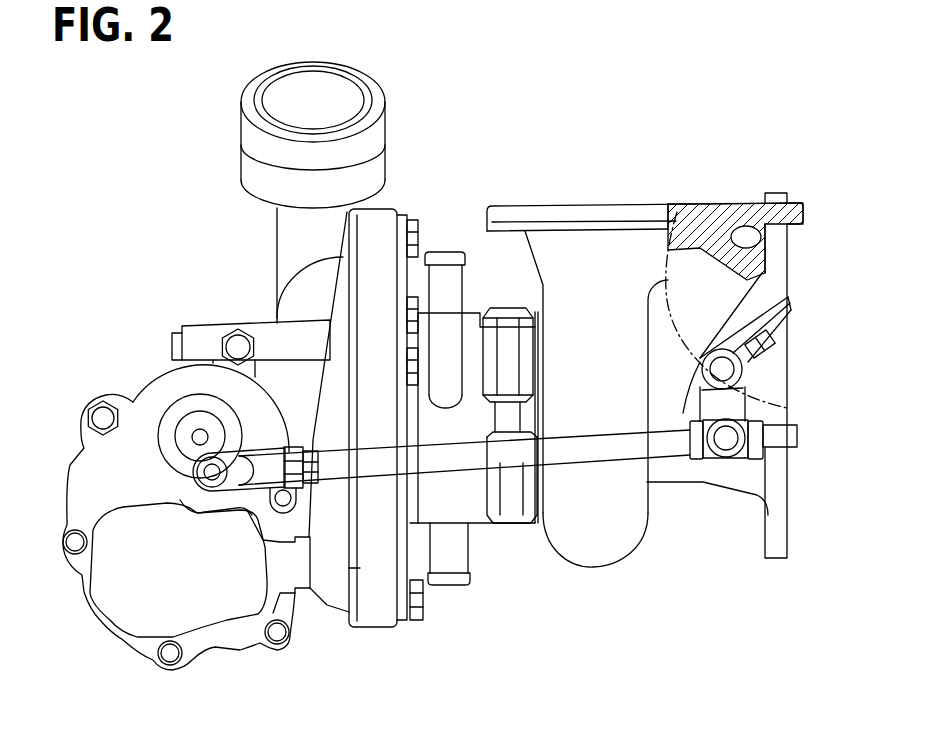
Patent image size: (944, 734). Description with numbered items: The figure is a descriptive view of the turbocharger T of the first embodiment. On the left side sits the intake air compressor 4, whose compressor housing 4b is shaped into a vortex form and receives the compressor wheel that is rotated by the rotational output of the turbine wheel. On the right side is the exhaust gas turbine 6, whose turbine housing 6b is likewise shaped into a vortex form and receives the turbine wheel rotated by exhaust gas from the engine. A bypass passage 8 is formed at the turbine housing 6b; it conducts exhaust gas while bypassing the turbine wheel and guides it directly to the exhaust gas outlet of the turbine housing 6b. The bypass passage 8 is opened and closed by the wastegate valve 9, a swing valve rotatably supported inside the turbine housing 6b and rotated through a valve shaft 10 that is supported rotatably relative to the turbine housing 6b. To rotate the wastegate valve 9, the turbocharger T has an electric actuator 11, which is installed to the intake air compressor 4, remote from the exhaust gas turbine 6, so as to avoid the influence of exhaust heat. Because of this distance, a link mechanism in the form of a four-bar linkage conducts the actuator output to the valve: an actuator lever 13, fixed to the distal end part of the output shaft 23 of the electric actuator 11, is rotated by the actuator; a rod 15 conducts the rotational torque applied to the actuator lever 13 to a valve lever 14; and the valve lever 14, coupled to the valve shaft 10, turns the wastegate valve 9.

The turbocharger T is at (548, 117).
The intake air compressor 4 is at (262, 280).
The compressor housing 4b is at (332, 578).
The exhaust gas turbine 6 is at (638, 568).
The turbine housing 6b is at (592, 552).
The bypass passage 8 is at (698, 277).
The wastegate valve 9 is at (773, 308).
The valve shaft 10 is at (728, 373).
The electric actuator 11 is at (133, 381).
The actuator lever 13 is at (185, 448).
The valve lever 14 is at (707, 393).
The rod 15 is at (573, 455).
The output shaft 23 is at (200, 433).